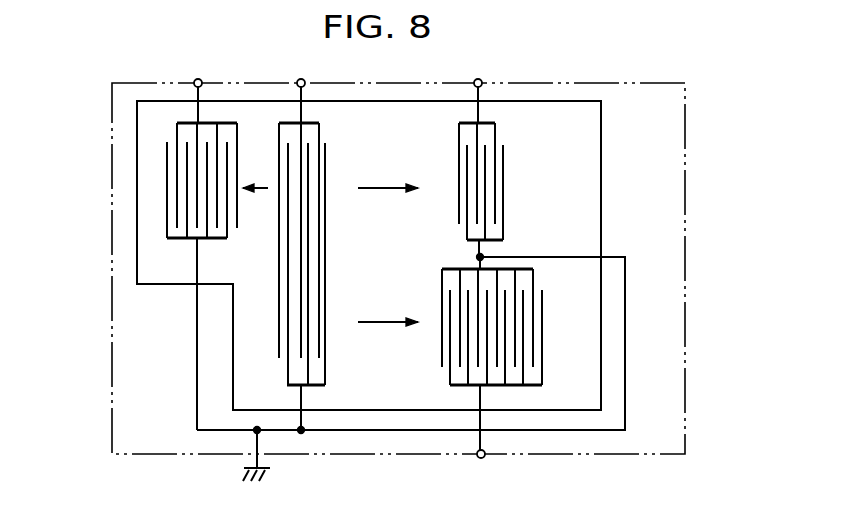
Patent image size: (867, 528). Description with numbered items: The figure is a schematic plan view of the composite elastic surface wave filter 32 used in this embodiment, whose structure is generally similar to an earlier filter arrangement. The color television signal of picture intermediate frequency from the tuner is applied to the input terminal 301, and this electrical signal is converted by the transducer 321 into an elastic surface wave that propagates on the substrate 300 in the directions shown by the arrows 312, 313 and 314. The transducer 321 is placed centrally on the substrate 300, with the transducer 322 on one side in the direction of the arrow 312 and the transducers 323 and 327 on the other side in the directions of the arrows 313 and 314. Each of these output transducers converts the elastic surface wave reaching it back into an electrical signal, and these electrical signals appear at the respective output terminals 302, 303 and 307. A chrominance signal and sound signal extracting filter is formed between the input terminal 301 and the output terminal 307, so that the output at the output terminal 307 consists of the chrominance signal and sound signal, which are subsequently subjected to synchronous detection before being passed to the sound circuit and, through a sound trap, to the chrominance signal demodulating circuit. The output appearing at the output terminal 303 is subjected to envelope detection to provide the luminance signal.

The composite elastic surface wave filter 32 is at (688, 185).
The substrate 300 is at (601, 190).
The input terminal 301 is at (304, 80).
The output terminal 302 is at (201, 80).
The output terminal 303 is at (481, 80).
The output terminal 307 is at (484, 457).
The arrow 312 is at (262, 190).
The arrow 313 is at (393, 190).
The arrow 314 is at (393, 324).
The transducer 321 is at (325, 158).
The transducer 322 is at (167, 158).
The transducer 323 is at (503, 157).
The transducer 327 is at (552, 304).